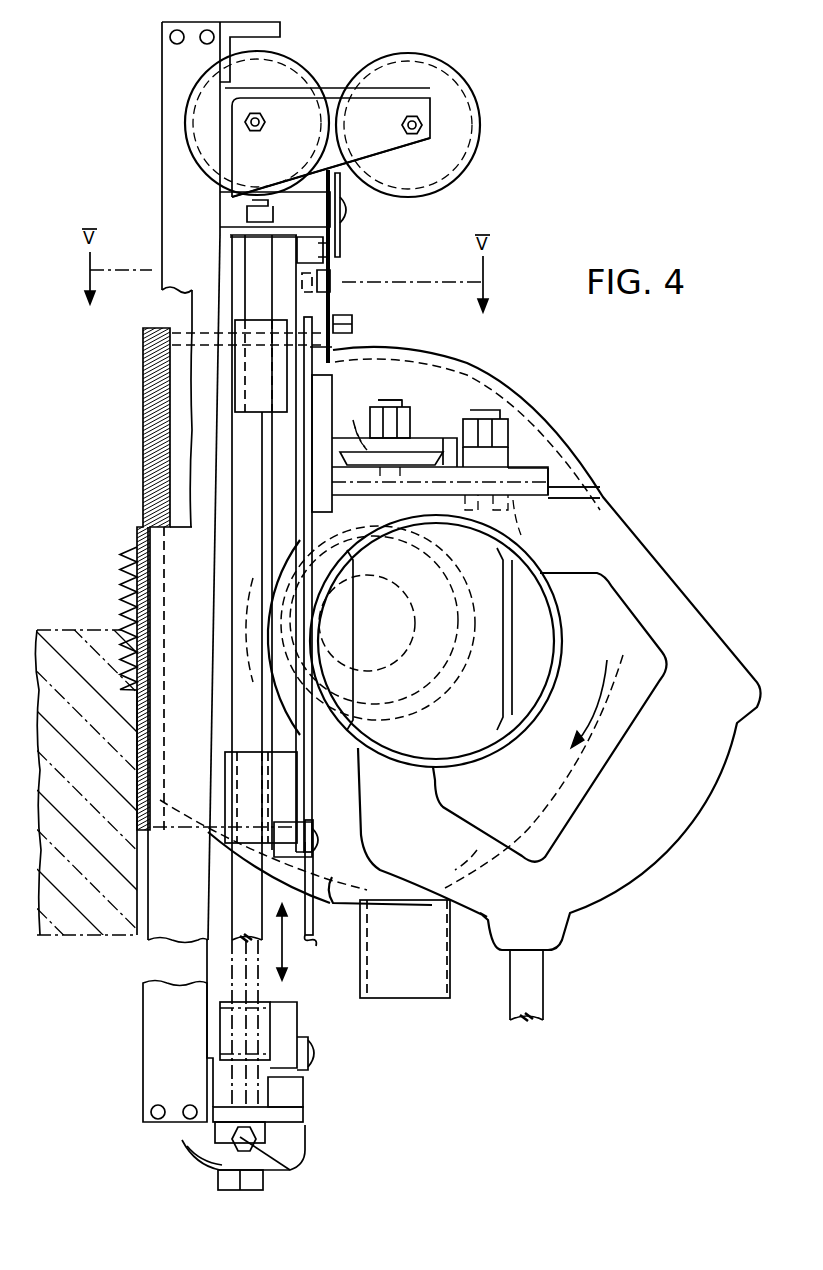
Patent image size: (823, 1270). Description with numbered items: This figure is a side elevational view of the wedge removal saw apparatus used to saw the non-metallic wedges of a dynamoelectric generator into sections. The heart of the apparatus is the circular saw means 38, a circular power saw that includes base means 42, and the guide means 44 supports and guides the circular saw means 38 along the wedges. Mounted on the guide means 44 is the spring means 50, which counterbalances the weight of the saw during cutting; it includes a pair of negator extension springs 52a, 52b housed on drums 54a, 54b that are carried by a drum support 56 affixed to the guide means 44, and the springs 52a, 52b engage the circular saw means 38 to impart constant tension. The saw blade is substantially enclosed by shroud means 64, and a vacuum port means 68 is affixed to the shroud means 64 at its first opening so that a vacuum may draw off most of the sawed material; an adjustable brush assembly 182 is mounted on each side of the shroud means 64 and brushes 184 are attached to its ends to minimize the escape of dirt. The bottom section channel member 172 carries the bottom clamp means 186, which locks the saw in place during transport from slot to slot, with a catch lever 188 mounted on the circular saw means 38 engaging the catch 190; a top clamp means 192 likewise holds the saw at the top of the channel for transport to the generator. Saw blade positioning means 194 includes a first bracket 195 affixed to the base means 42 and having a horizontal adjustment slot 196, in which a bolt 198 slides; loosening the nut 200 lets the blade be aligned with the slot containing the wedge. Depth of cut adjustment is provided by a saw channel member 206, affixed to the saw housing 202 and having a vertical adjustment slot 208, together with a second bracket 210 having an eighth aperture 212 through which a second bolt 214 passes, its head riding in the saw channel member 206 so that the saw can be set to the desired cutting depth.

The circular saw means 38 is at (613, 500).
The base means 42 is at (303, 380).
The guide means 44 is at (205, 120).
The spring means 50 is at (428, 84).
The spring 52a is at (295, 82).
The spring 52b is at (470, 90).
The drum 54a is at (268, 80).
The drum 54b is at (442, 133).
The drum support 56 is at (337, 95).
The shroud means 64 is at (367, 348).
The vacuum port means 68 is at (452, 998).
The bottom section channel member 172 is at (172, 1028).
The adjustable brush assembly 182 is at (143, 522).
The brushes 184 is at (143, 425).
The bottom clamp means 186 is at (212, 1113).
The catch lever 188 is at (320, 942).
The catch 190 is at (303, 1140).
The top clamp means 192 is at (340, 250).
The saw blade positioning means 194 is at (485, 365).
The first bracket 195 is at (400, 440).
The horizontal adjustment slot 196 is at (348, 426).
The bolt 198 is at (385, 397).
The nut 200 is at (410, 418).
The saw housing 202 is at (600, 560).
The saw channel member 206 is at (580, 482).
The vertical adjustment slot 208 is at (536, 523).
The second bracket 210 is at (532, 472).
The eighth aperture 212 is at (527, 397).
The second bolt 214 is at (487, 413).